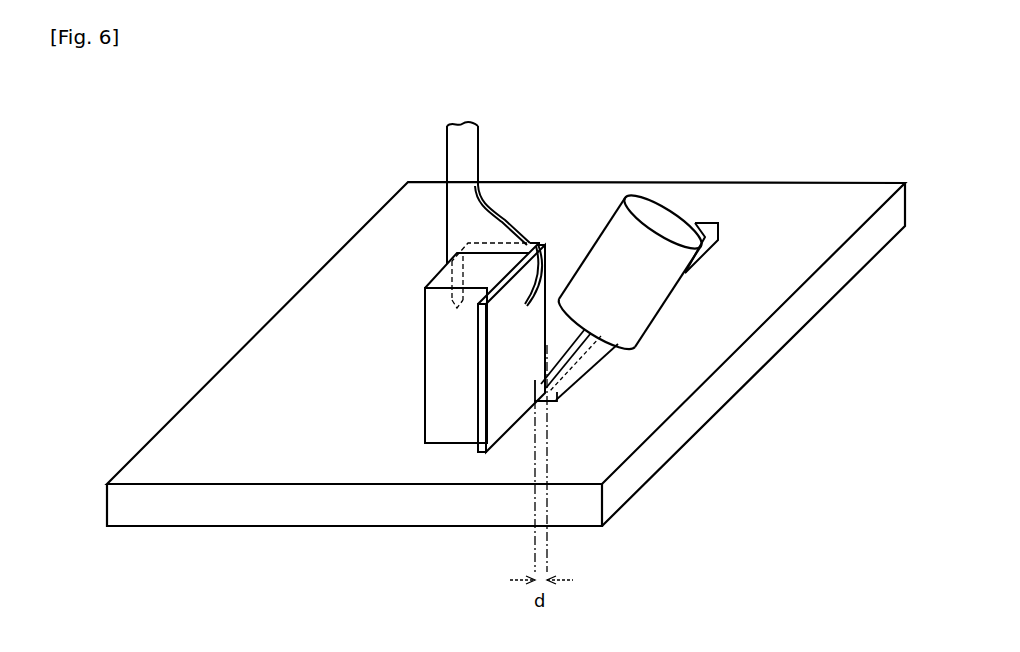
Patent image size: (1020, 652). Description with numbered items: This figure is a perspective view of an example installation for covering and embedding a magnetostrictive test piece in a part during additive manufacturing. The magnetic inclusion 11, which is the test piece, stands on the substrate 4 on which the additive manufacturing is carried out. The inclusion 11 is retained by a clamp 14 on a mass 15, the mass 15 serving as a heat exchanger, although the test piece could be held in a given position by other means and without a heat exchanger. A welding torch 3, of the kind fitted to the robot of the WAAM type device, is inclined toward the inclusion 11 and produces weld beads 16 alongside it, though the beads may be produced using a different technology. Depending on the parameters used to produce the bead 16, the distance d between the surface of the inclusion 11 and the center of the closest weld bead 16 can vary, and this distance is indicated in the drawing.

The torch 3 is at (658, 215).
The substrate 4 is at (743, 327).
The magnetic inclusion 11 is at (545, 287).
The clamp 14 is at (468, 152).
The mass 15 is at (438, 352).
The weld beads 16 is at (707, 222).